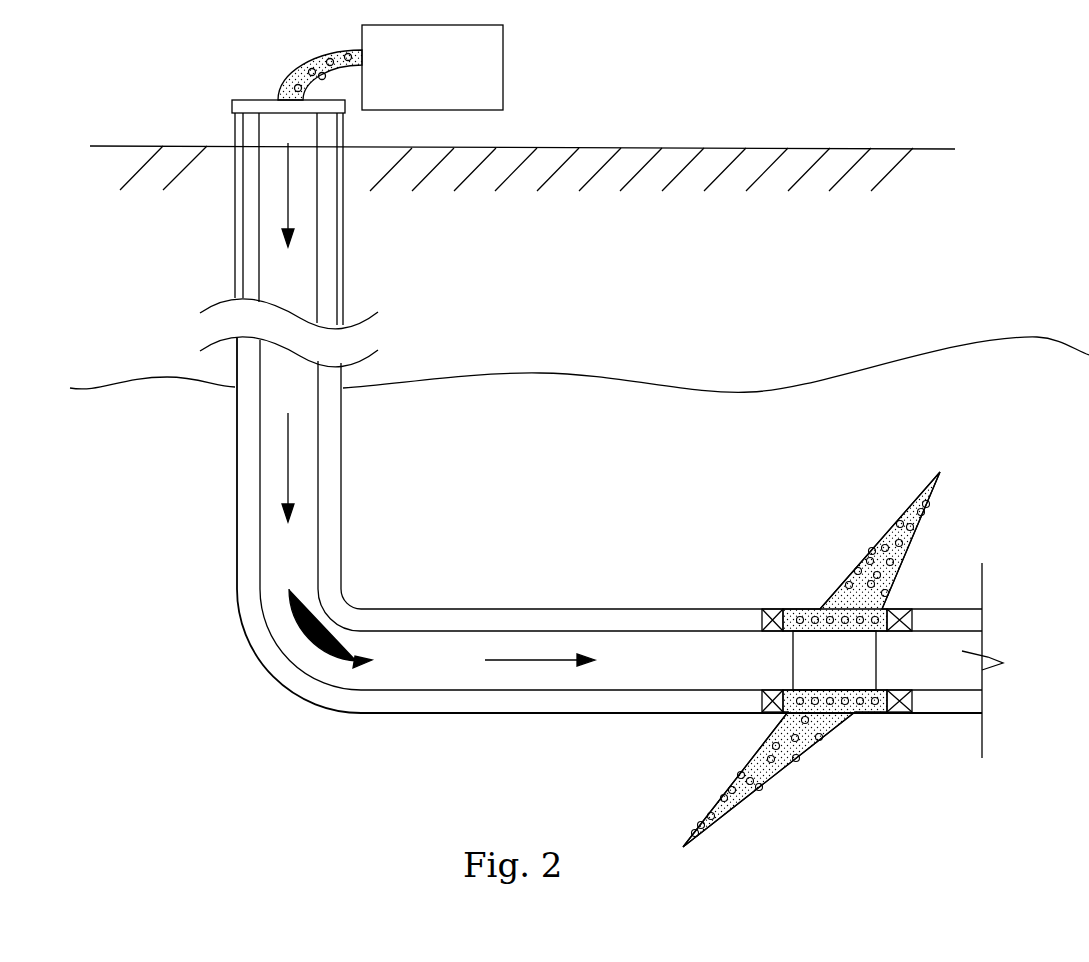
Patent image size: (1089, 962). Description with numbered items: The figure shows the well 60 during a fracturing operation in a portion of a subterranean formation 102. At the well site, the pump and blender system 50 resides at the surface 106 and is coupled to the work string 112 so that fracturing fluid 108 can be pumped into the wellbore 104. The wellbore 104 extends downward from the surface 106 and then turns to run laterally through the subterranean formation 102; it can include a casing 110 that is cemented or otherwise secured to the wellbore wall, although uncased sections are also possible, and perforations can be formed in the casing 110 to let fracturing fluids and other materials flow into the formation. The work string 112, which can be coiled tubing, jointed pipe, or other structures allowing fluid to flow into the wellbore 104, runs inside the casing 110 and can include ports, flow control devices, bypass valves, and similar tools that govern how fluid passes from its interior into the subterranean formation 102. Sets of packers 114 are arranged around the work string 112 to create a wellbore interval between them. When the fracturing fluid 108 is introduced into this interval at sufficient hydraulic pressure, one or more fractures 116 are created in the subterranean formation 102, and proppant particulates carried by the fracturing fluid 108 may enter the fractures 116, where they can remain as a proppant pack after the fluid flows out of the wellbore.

The pump and blender system 50 is at (459, 81).
The well 60 is at (251, 699).
The subterranean formation 102 is at (633, 425).
The wellbore 104 is at (250, 247).
The surface 106 is at (728, 148).
The fracturing fluid 108 is at (300, 72).
The casing 110 is at (242, 285).
The work string 112 is at (260, 515).
The packers 114 is at (773, 607).
The fractures 116 is at (862, 550).